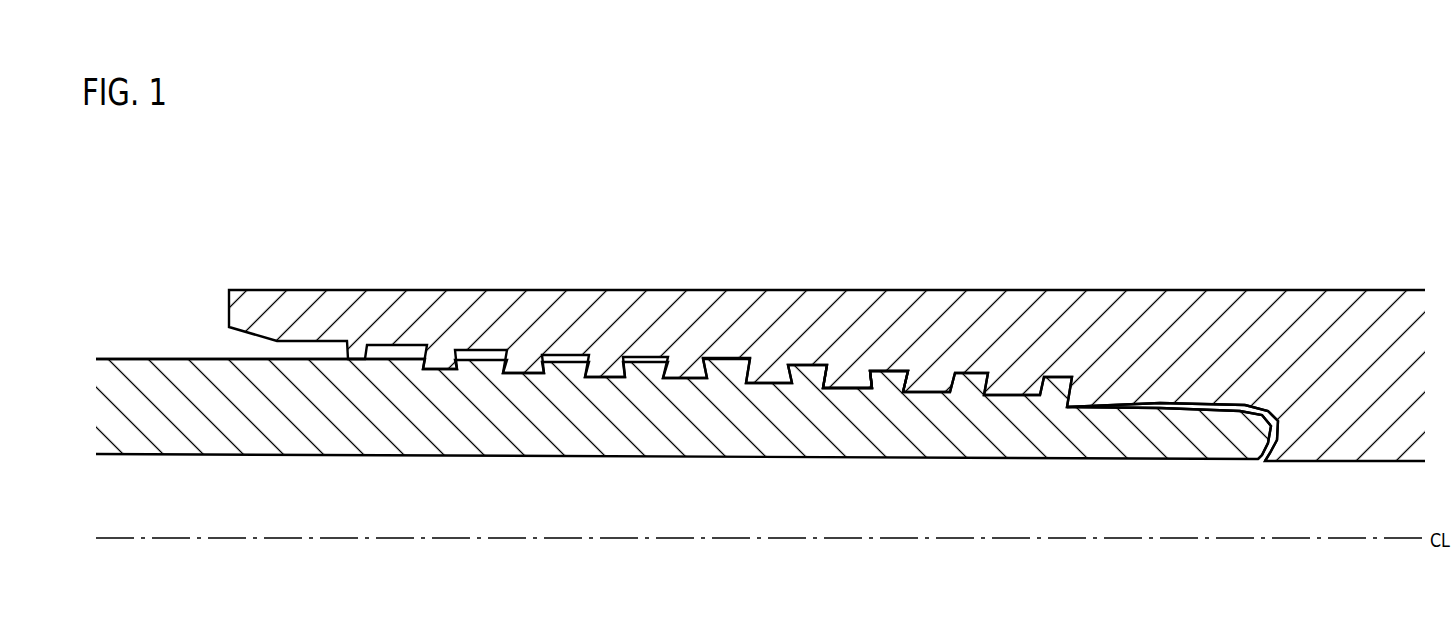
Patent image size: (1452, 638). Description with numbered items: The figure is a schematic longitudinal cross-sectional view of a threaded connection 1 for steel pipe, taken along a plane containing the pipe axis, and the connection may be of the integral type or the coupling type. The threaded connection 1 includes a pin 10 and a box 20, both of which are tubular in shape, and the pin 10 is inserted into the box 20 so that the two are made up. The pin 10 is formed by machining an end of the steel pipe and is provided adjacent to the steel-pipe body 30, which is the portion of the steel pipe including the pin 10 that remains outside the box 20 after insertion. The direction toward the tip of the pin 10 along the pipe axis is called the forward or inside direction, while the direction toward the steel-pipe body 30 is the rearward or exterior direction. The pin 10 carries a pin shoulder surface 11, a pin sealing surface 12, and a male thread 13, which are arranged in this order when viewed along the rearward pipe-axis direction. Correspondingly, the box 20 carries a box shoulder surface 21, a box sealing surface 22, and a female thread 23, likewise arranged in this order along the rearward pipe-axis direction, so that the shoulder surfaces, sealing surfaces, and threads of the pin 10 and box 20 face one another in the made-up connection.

The threaded connection 1 is at (760, 362).
The pin 10 is at (387, 459).
The pin shoulder surface 11 is at (1276, 455).
The pin sealing surface 12 is at (1170, 411).
The male thread 13 is at (888, 382).
The box 20 is at (342, 287).
The box shoulder surface 21 is at (1247, 405).
The box sealing surface 22 is at (1170, 403).
The female thread 23 is at (847, 380).
The steel-pipe body 30 is at (136, 357).